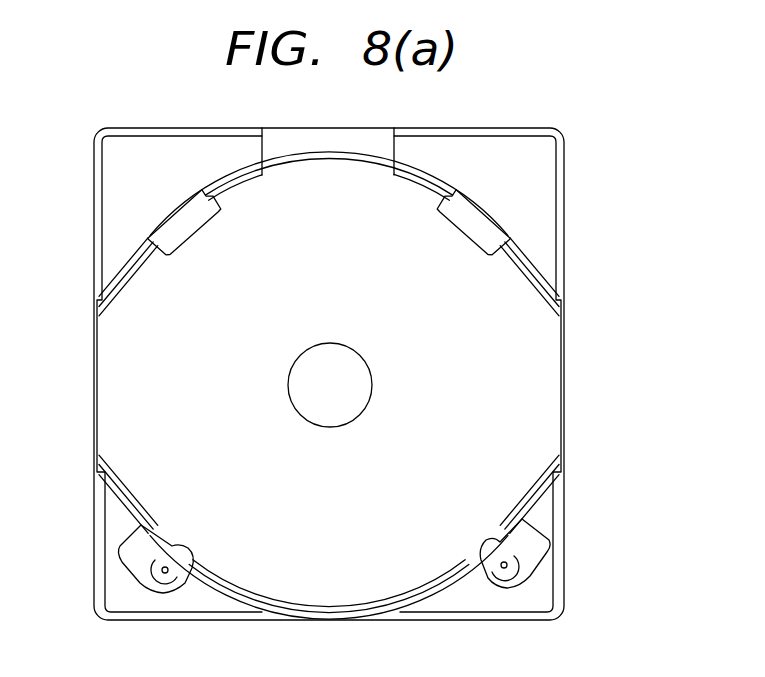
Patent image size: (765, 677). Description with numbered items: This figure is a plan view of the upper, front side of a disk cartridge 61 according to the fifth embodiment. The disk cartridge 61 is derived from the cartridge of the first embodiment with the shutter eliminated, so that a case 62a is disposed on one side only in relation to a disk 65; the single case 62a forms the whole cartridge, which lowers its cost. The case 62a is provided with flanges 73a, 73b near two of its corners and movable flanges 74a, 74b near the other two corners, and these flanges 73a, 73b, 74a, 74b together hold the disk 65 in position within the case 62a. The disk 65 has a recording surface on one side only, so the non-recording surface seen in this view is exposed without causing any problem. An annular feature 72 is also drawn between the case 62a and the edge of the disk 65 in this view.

The disk cartridge 61 is at (626, 591).
The case 62a is at (565, 463).
The disk 65 is at (295, 220).
The annular rib 72 is at (537, 271).
The flange 73a is at (483, 220).
The flange 73b is at (172, 222).
The movable flange 74a is at (500, 547).
The movable flange 74b is at (175, 556).